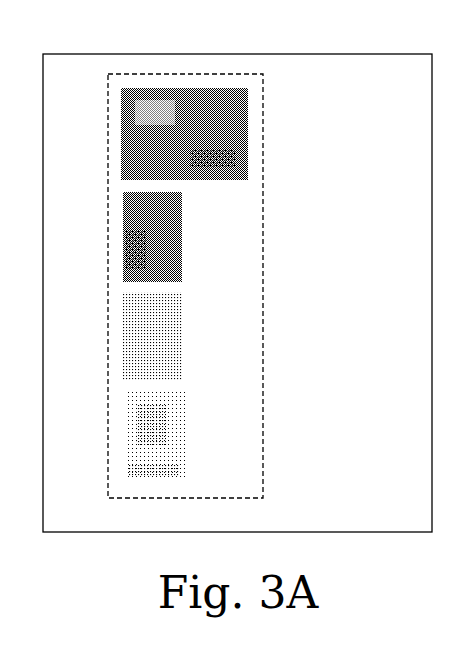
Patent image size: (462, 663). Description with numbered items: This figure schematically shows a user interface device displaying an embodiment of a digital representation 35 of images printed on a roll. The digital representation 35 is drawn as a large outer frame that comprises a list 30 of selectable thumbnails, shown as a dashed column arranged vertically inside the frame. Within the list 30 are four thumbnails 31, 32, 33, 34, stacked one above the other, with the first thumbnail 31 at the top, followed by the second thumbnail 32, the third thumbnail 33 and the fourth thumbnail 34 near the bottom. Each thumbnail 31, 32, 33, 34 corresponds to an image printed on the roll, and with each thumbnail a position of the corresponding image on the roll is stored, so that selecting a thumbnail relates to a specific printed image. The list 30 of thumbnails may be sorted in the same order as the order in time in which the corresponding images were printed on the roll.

The list of selectable thumbnails 30 is at (264, 460).
The thumbnail 31 is at (238, 136).
The thumbnail 32 is at (172, 248).
The thumbnail 33 is at (178, 338).
The thumbnail 34 is at (166, 437).
The digital representation 35 is at (84, 54).